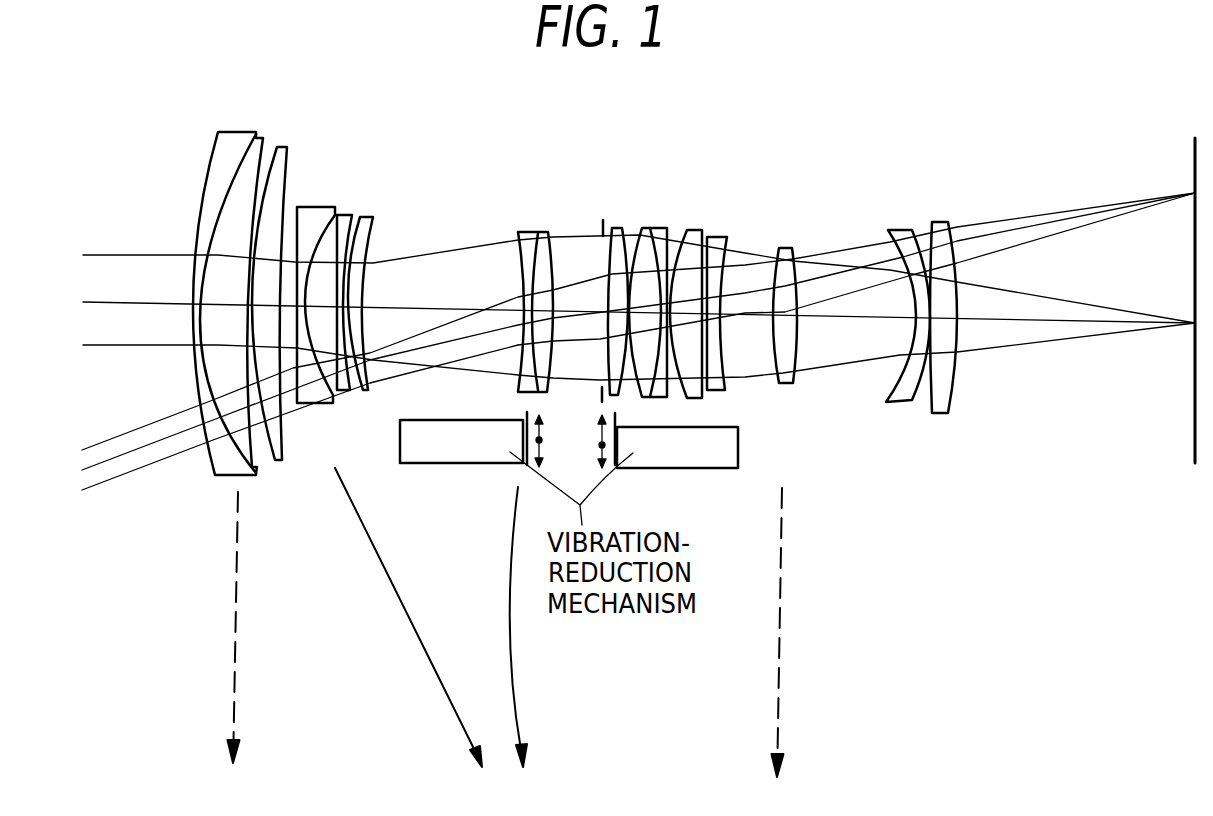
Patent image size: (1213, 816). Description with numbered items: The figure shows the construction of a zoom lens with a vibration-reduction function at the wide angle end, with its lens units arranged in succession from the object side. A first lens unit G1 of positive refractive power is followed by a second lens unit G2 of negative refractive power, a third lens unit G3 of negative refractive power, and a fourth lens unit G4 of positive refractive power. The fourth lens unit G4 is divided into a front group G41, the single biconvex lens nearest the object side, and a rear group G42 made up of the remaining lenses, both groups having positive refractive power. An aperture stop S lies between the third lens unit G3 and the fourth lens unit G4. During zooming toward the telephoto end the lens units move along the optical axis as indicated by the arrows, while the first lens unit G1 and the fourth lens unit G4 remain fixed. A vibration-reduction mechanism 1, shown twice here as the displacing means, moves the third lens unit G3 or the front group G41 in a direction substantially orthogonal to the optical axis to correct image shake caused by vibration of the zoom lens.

The first lens unit G1 is at (288, 124).
The second lens unit G2 is at (373, 197).
The third lens unit G3 is at (560, 224).
The fourth lens unit G4 is at (958, 122).
The front group G41 is at (617, 237).
The rear group G42 is at (957, 208).
The aperture stop S is at (600, 293).
The vibration-reduction mechanism 1 is at (435, 466).